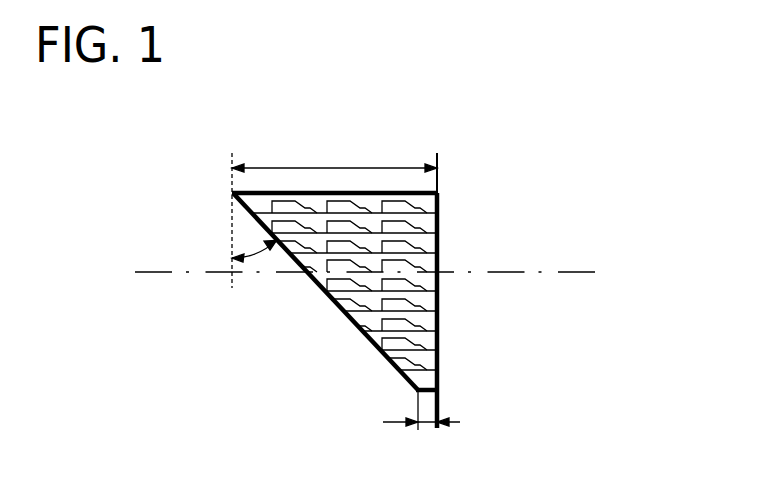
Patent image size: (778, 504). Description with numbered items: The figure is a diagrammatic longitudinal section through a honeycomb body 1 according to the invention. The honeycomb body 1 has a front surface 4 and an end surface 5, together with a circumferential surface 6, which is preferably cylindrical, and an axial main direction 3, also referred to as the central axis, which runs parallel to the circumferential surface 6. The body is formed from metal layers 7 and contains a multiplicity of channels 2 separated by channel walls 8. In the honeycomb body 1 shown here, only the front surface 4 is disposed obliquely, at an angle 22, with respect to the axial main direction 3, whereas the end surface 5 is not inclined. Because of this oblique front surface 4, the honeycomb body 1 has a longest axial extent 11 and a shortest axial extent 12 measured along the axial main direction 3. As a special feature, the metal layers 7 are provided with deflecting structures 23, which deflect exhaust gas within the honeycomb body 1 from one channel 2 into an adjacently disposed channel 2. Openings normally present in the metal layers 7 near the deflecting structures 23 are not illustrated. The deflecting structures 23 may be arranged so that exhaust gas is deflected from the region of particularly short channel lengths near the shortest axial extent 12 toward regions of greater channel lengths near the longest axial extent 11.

The honeycomb body 1 is at (424, 265).
The channel 2 is at (422, 362).
The axial main direction 3 is at (610, 272).
The front surface 4 is at (377, 350).
The end surface 5 is at (440, 223).
The circumferential surface 6 is at (350, 192).
The metal layer 7 is at (260, 167).
The channel wall 8 is at (417, 210).
The longest axial extent 11 is at (415, 167).
The shortest axial extent 12 is at (428, 423).
The angle 22 is at (247, 230).
The deflecting structure 23 is at (437, 323).